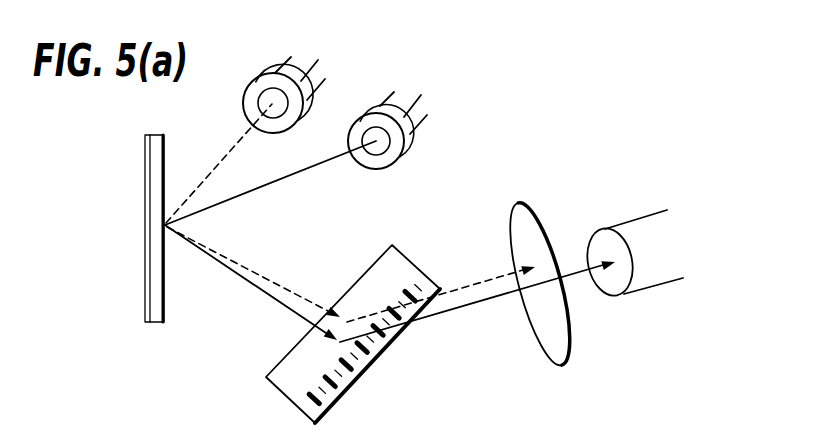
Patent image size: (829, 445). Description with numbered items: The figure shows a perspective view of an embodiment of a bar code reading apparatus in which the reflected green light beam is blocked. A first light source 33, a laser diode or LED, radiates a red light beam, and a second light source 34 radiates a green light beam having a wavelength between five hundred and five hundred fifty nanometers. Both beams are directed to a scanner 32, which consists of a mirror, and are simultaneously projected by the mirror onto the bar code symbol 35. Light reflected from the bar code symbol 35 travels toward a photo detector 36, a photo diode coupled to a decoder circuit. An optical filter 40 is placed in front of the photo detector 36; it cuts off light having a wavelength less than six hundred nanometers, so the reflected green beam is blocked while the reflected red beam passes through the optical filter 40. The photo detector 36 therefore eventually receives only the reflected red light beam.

The scanner 32 is at (145, 190).
The first light source 33 is at (421, 93).
The second light source 34 is at (314, 60).
The bar code symbol 35 is at (413, 262).
The photo detector 36 is at (650, 213).
The optical filter 40 is at (573, 348).